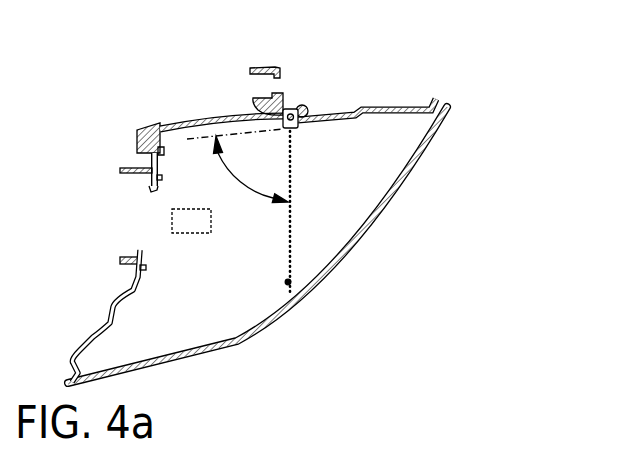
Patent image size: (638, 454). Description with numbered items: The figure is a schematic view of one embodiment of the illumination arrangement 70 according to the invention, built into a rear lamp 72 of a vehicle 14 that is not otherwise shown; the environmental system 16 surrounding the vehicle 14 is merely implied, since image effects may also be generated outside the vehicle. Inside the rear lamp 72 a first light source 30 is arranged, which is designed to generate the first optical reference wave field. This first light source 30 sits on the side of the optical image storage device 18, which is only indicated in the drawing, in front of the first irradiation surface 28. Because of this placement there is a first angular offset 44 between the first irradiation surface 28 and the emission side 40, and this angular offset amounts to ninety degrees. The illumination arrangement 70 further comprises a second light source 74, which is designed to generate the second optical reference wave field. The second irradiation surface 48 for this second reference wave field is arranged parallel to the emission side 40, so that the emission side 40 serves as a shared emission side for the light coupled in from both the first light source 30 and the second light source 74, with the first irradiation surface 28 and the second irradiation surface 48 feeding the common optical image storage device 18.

The illumination arrangement 70 is at (122, 91).
The vehicle 14 is at (102, 164).
The first light source 30 is at (292, 113).
The first irradiation surface 28 is at (311, 132).
The rear lamp 72 is at (403, 86).
The emission side 40 is at (308, 184).
The first angular offset 44 is at (228, 173).
The second light source 74 is at (170, 220).
The second irradiation surface 48 is at (274, 248).
The optical image storage device 18 is at (285, 283).
The environmental system 16 is at (441, 304).